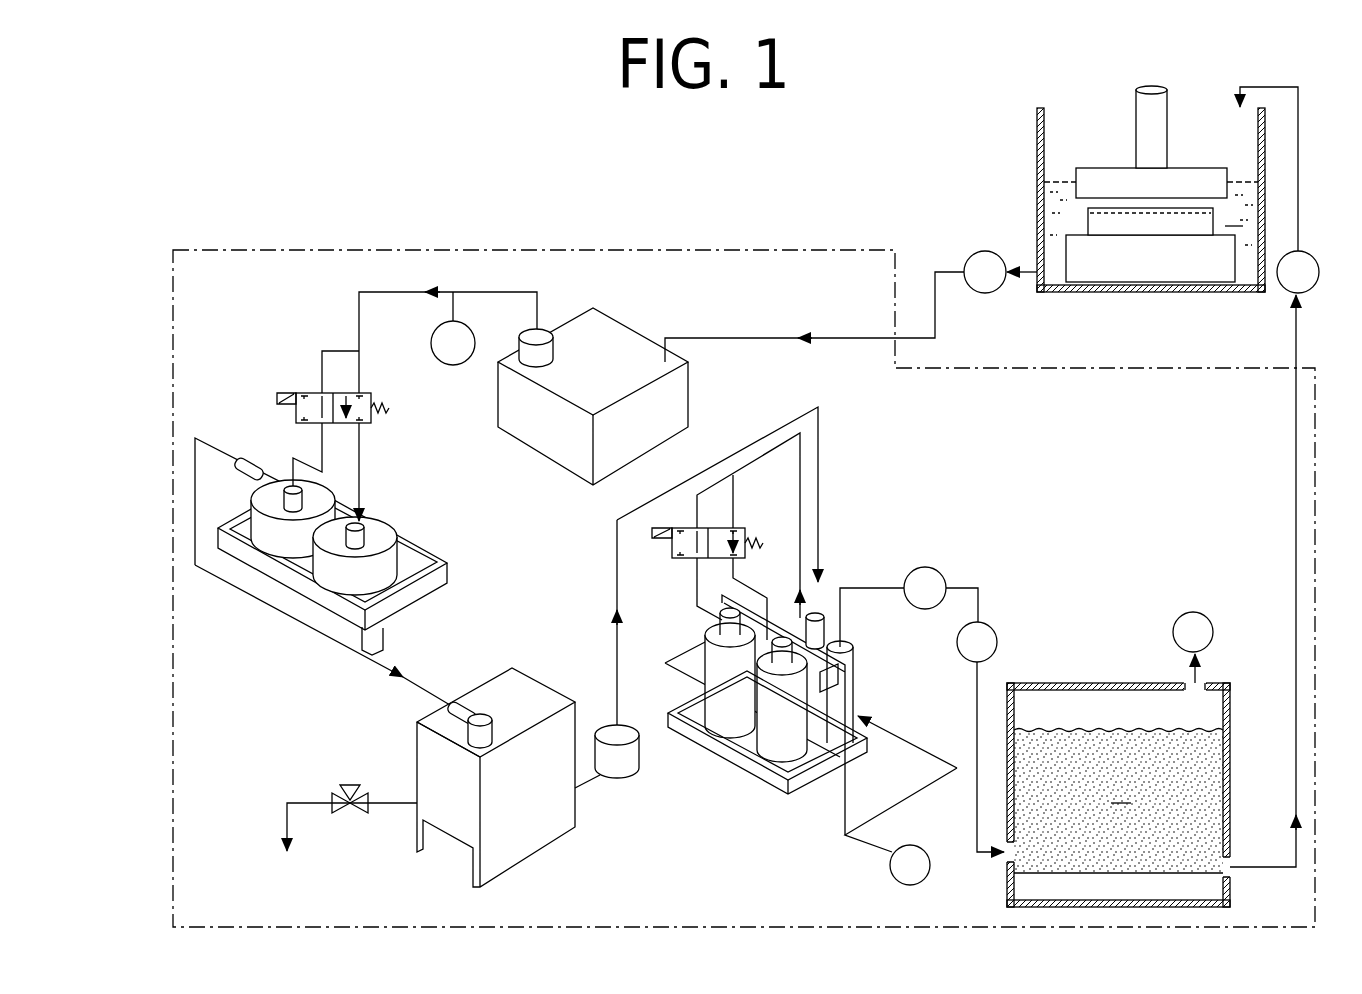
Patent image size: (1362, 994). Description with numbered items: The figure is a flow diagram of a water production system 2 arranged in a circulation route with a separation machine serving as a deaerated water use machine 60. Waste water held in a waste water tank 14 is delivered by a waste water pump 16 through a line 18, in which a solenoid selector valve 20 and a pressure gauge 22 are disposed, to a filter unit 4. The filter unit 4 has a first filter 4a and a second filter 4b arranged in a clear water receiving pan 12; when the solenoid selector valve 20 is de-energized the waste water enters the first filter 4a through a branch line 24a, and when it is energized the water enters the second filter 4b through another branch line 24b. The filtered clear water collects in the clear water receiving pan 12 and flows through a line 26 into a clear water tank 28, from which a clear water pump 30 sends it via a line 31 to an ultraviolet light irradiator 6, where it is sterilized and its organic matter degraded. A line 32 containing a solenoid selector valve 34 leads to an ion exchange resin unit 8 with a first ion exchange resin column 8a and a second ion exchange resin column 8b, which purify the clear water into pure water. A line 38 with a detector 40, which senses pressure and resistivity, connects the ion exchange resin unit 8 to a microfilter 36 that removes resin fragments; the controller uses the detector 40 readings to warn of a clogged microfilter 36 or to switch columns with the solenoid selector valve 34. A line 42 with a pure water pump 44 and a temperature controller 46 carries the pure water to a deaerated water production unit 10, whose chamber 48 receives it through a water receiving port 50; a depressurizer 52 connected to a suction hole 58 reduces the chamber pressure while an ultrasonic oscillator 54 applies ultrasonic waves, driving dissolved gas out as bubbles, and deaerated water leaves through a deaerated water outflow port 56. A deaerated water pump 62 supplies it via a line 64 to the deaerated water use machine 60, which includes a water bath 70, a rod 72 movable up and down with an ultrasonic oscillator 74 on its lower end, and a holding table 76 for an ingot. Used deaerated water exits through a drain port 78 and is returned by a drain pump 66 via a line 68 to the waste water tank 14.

The water production system 2 is at (292, 248).
The filter unit 4 is at (340, 523).
The first filter 4a is at (330, 497).
The second filter 4b is at (378, 525).
The ultraviolet light irradiator 6 is at (818, 610).
The ion exchange resin unit 8 is at (766, 696).
The first ion exchange resin column 8a is at (735, 755).
The second ion exchange resin column 8b is at (770, 756).
The deaerated water production unit 10 is at (1148, 763).
The clear water receiving pan 12 is at (418, 592).
The waste water tank 14 is at (614, 328).
The waste water pump 16 is at (545, 355).
The line 18 is at (357, 302).
The solenoid selector valve 20 is at (296, 395).
The pressure gauge 22 is at (431, 343).
The branch line 24a is at (318, 447).
The branch line 24b is at (362, 447).
The line 26 is at (315, 632).
The clear water tank 28 is at (505, 852).
The clear water pump 30 is at (620, 778).
The line 31 is at (612, 585).
The line 32 is at (765, 455).
The solenoid selector valve 34 is at (677, 561).
The microfilter 36 is at (855, 665).
The line 38 is at (905, 800).
The detector 40 is at (898, 882).
The line 42 is at (965, 586).
The pure water pump 44 is at (926, 565).
The temperature controller 46 is at (994, 630).
The chamber 48 is at (1230, 772).
The water receiving port 50 is at (1005, 858).
The depressurizer 52 is at (1198, 612).
The ultrasonic oscillator 54 is at (1215, 890).
The deaerated water outflow port 56 is at (1235, 865).
The suction hole 58 is at (1205, 680).
The deaerated water use machine 60 is at (1118, 205).
The deaerated water pump 62 is at (1288, 290).
The line 64 is at (1303, 178).
The drain pump 66 is at (983, 294).
The line 68 is at (835, 340).
The water bath 70 is at (1037, 140).
The rod 72 is at (1160, 92).
The ultrasonic oscillator 74 is at (1205, 177).
The holding table 76 is at (1195, 275).
The drain port 78 is at (1035, 265).